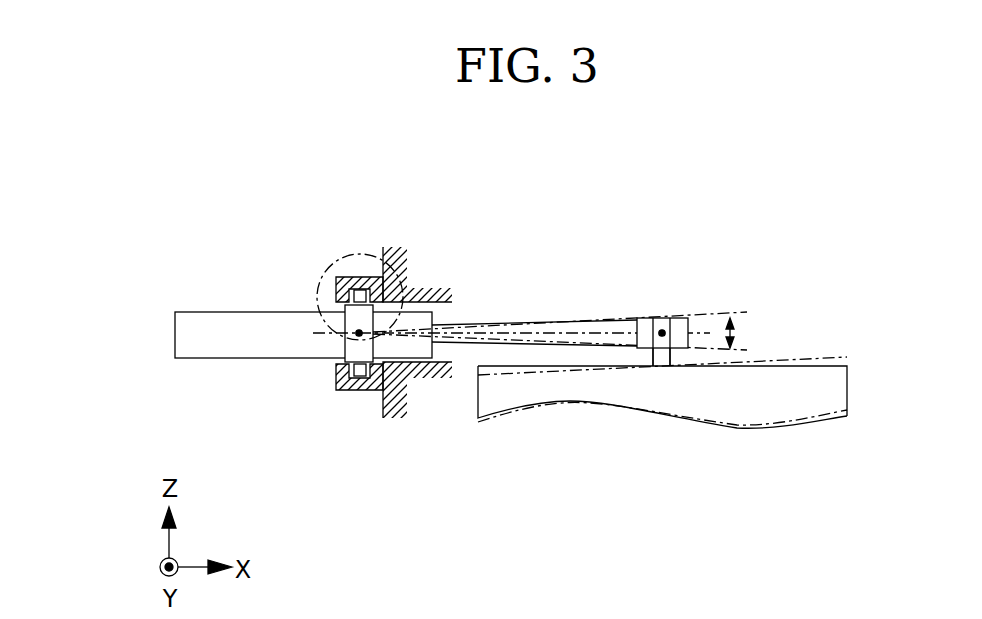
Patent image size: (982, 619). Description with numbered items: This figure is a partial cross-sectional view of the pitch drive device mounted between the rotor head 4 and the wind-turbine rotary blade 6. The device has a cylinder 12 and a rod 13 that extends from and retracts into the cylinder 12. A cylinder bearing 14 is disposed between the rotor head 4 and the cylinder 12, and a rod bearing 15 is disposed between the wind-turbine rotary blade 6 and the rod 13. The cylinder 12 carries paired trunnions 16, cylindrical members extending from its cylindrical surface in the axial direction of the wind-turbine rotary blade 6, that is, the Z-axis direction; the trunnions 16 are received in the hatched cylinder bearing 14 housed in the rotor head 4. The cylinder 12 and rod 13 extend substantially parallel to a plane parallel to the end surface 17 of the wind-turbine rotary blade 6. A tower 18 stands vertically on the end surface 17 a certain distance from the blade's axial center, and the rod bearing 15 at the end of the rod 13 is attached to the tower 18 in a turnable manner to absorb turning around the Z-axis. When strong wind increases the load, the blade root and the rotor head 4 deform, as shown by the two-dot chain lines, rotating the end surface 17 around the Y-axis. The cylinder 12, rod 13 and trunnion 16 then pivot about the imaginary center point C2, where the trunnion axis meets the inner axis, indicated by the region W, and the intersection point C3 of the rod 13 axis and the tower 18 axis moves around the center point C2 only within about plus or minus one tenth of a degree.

The rotor head 4 is at (383, 262).
The wind-turbine rotary blade 6 is at (826, 396).
The cylinder 12 is at (193, 312).
The rod 13 is at (528, 325).
The cylinder bearing 14 is at (336, 380).
The rod bearing 15 is at (678, 318).
The trunnion 16 is at (336, 290).
The end surface 17 is at (823, 357).
The tower 18 is at (652, 352).
The center point C2 is at (356, 331).
The intersection point C3 is at (659, 328).
The pivot region W is at (323, 268).